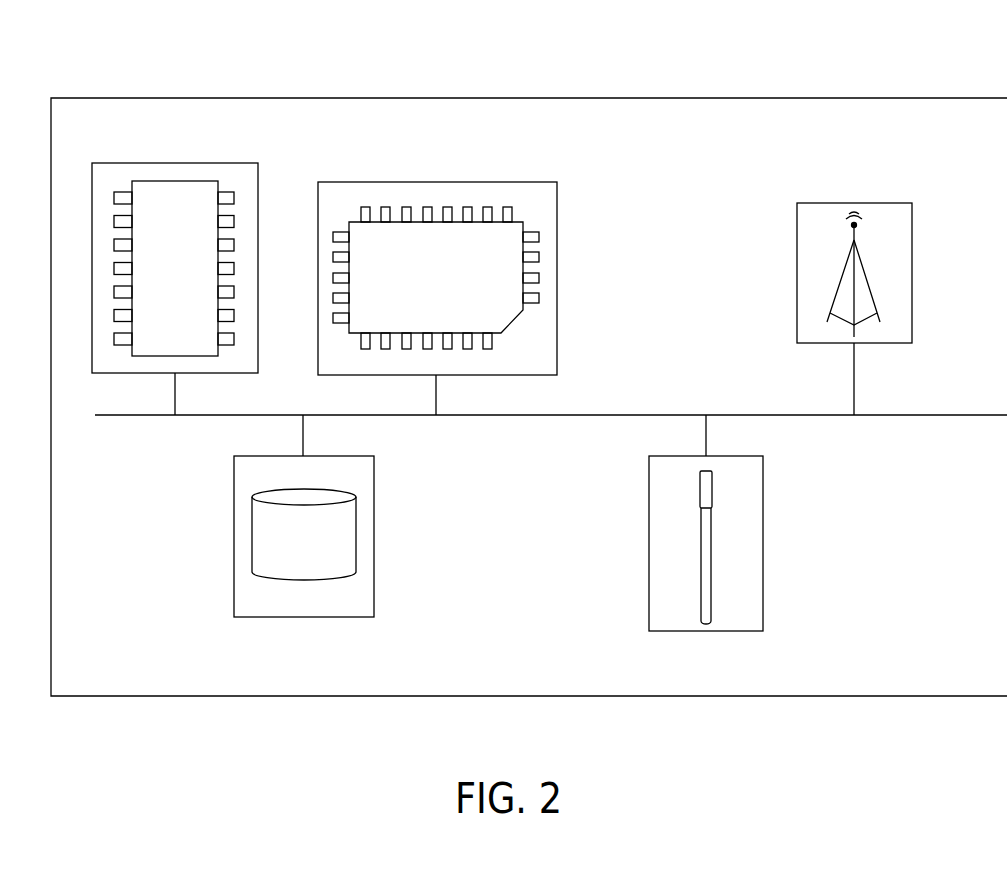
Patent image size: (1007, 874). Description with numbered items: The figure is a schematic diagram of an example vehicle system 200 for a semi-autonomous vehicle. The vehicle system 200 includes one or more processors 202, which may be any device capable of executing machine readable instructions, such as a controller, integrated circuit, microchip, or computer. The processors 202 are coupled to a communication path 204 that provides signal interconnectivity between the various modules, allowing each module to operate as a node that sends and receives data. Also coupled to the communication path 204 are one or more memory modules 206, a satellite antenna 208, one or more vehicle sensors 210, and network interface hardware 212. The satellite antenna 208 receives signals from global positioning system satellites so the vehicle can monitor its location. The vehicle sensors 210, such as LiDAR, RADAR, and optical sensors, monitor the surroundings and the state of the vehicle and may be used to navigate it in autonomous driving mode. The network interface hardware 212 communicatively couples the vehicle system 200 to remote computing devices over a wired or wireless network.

The vehicle system 200 is at (923, 98).
The processors 202 is at (175, 163).
The communication path 204 is at (947, 415).
The memory modules 206 is at (437, 182).
The satellite antenna 208 is at (706, 631).
The vehicle sensors 210 is at (303, 617).
The network interface hardware 212 is at (852, 203).